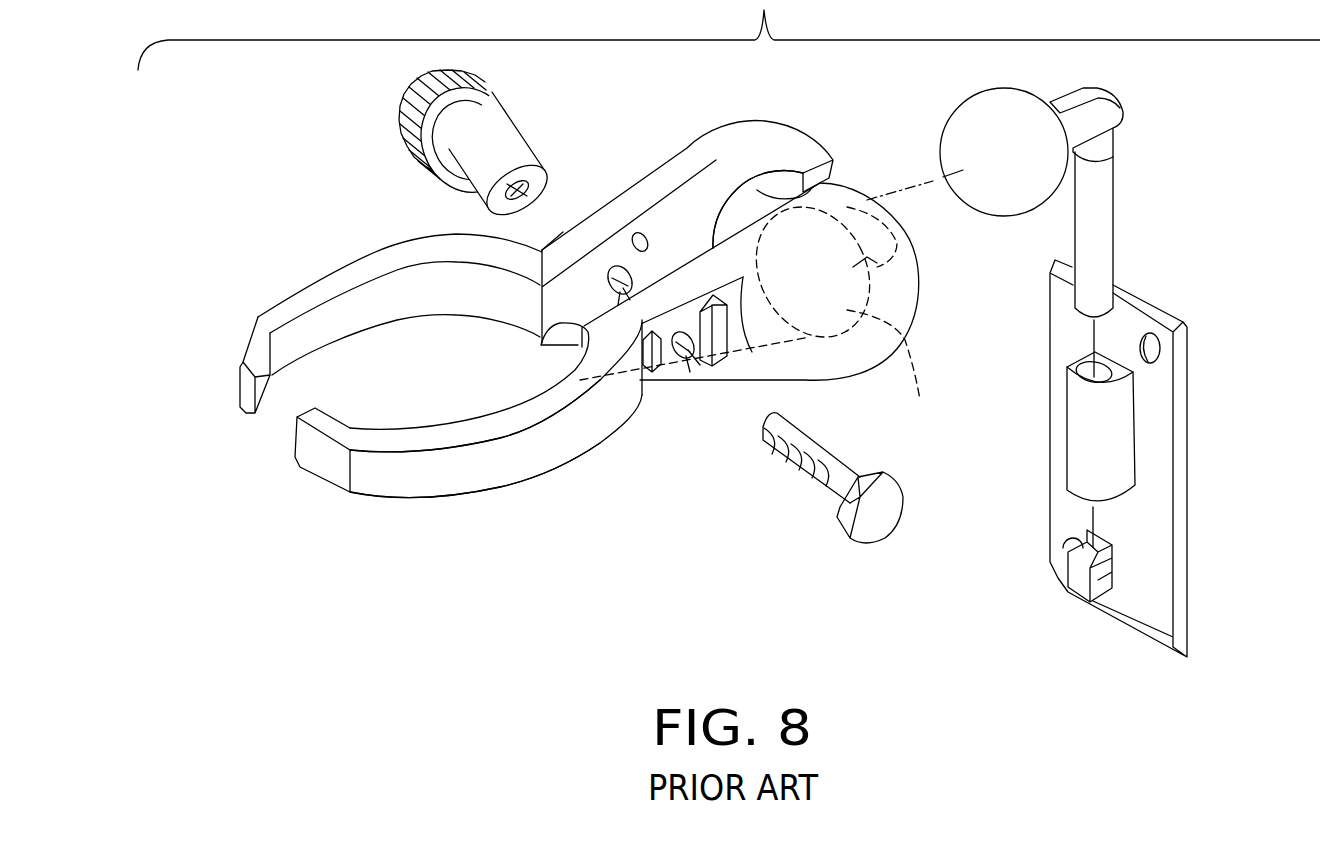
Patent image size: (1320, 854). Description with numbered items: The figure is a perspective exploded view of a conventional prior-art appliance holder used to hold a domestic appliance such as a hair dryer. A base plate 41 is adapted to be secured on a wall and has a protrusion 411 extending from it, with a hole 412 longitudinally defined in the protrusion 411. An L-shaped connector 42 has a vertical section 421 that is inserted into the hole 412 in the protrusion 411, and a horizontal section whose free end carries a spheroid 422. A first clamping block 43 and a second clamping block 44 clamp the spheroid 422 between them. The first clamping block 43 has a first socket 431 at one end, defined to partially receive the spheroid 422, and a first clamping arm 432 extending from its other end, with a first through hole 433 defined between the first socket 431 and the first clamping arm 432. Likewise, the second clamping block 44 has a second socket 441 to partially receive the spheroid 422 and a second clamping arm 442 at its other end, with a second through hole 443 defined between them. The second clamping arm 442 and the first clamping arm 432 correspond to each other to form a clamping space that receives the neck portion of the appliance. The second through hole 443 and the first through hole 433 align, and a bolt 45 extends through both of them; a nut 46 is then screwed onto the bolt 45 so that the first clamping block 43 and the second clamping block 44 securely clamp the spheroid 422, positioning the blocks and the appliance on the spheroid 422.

The base plate 41 is at (1150, 500).
The protrusion 411 is at (1097, 443).
The hole 412 is at (1083, 367).
The L-shaped connector 42 is at (1160, 112).
The vertical section 421 is at (1097, 257).
The spheroid 422 is at (997, 170).
The first clamping block 43 is at (662, 140).
The first socket 431 is at (830, 180).
The first clamping arm 432 is at (318, 290).
The first through hole 433 is at (540, 340).
The second clamping block 44 is at (609, 475).
The second socket 441 is at (905, 395).
The second clamping arm 442 is at (503, 463).
The second through hole 443 is at (675, 352).
The bolt 45 is at (690, 350).
The nut 46 is at (565, 232).